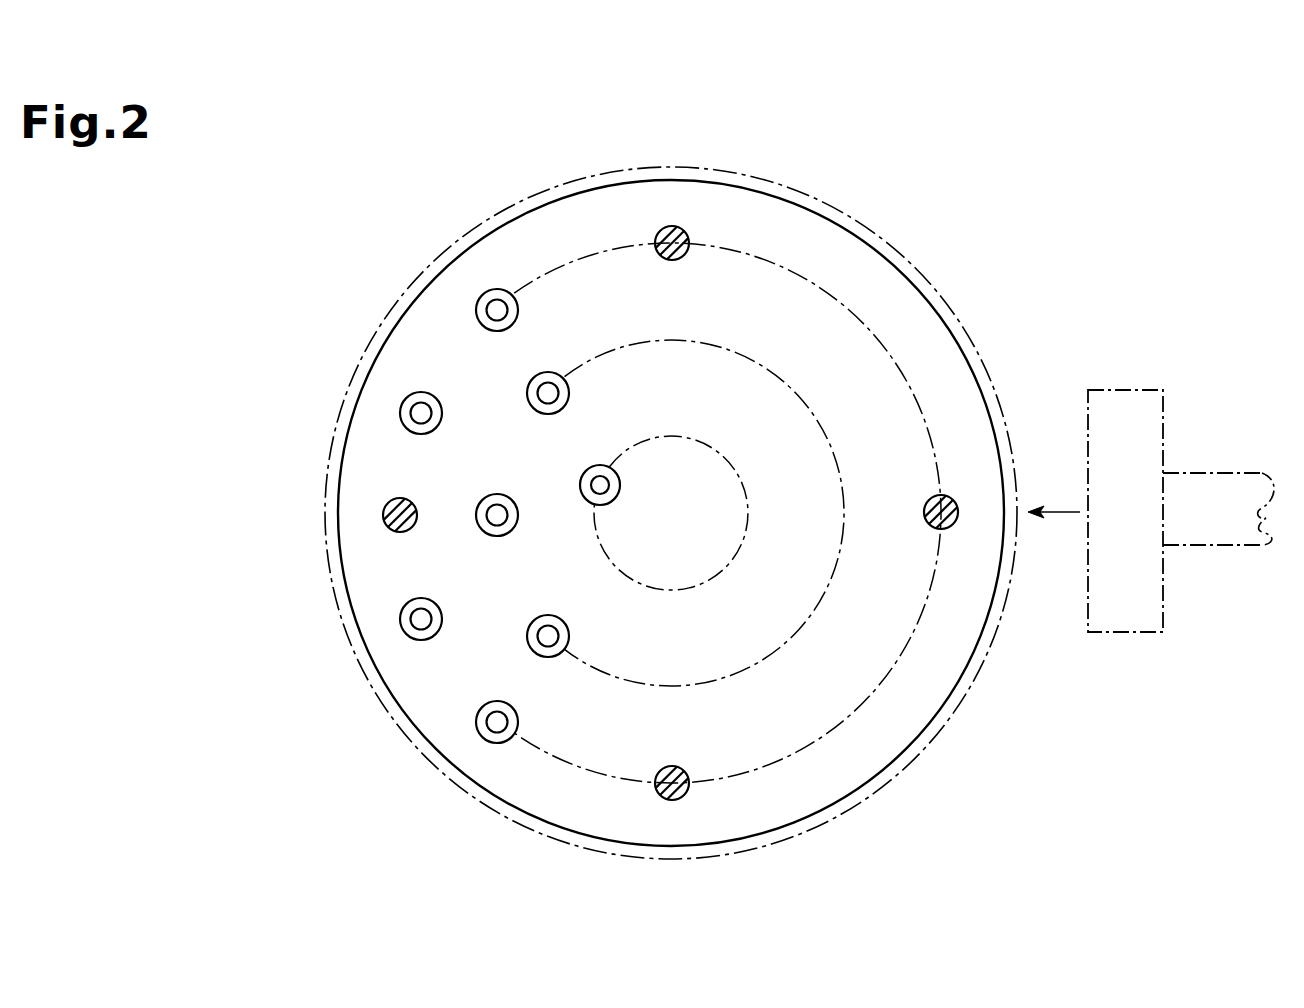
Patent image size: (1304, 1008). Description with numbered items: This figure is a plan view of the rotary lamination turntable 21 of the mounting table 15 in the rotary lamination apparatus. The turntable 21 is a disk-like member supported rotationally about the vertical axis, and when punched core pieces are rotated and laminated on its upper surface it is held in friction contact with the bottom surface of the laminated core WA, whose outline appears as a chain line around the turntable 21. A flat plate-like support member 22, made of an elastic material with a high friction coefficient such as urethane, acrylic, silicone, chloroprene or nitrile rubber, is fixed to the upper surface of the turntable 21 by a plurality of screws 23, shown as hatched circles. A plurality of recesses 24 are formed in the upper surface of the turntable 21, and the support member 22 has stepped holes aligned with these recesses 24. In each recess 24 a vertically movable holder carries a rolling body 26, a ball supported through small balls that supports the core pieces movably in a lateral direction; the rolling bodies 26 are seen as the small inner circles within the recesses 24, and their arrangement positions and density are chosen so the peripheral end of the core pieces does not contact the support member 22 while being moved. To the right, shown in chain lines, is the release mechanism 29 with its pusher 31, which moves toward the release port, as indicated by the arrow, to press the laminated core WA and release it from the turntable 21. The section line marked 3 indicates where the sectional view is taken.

The mounting table 15 is at (671, 487).
The rotary lamination turntable 21 is at (703, 182).
The support member 22 is at (768, 205).
The screws 23 is at (668, 261).
The recesses 24 is at (486, 324).
The rolling body 26 is at (497, 316).
The release mechanism 29 is at (1100, 389).
The pusher 31 is at (1150, 389).
The laminated core WA is at (882, 234).
The section line for FIG. 3 is at (303, 517).